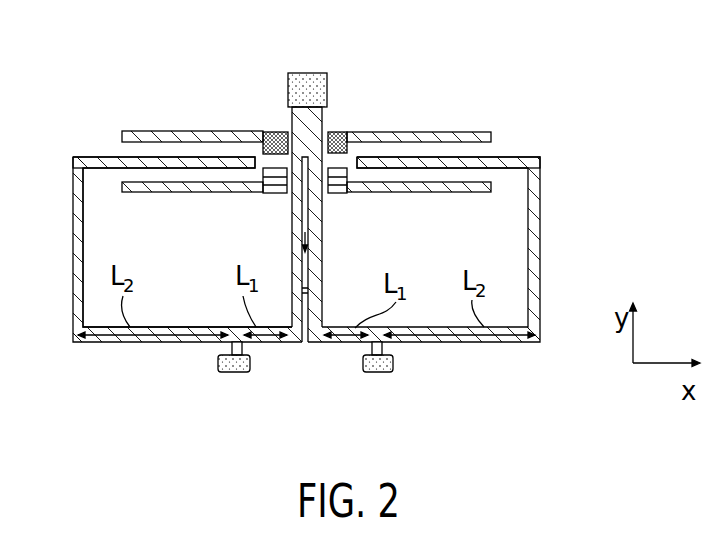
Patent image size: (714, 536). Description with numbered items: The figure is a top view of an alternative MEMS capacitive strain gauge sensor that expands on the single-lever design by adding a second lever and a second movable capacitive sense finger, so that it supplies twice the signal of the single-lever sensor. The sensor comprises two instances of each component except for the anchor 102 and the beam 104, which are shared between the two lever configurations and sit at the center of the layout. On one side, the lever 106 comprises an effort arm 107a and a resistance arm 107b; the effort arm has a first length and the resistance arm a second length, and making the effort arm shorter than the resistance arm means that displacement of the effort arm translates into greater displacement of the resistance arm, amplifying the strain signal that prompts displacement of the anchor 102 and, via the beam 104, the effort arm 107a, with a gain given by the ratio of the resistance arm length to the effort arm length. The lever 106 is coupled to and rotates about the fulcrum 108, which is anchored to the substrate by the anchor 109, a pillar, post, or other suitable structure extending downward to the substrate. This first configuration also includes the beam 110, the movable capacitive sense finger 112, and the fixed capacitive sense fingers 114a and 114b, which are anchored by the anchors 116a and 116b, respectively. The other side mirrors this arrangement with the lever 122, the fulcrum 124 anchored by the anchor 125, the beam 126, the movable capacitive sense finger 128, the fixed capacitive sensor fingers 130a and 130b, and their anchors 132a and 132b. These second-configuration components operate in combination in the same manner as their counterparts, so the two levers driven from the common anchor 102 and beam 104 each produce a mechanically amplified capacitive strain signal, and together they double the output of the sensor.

The anchor 102 is at (308, 84).
The beam 104 is at (310, 291).
The lever 106 is at (170, 285).
The effort arm 107a is at (268, 343).
The resistance arm 107b is at (105, 343).
The fulcrum 108 is at (232, 347).
The anchor 109 is at (237, 372).
The beam 110 is at (78, 240).
The movable capacitive sense finger 112 is at (167, 160).
The fixed capacitive sense finger 114a is at (160, 192).
The fixed capacitive sense finger 114b is at (222, 136).
The anchor 116a is at (270, 134).
The anchor 116b is at (268, 191).
The lever 122 is at (490, 343).
The fulcrum 124 is at (370, 347).
The anchor 125 is at (382, 372).
The beam 126 is at (535, 270).
The movable capacitive sense finger 128 is at (512, 160).
The fixed capacitive sensor finger 130a is at (413, 191).
The fixed capacitive sensor finger 130b is at (460, 138).
The anchor 132a is at (342, 192).
The anchor 132b is at (338, 134).